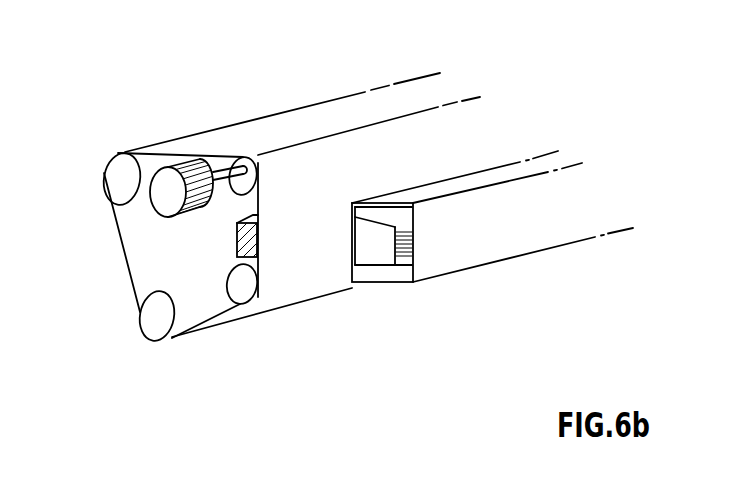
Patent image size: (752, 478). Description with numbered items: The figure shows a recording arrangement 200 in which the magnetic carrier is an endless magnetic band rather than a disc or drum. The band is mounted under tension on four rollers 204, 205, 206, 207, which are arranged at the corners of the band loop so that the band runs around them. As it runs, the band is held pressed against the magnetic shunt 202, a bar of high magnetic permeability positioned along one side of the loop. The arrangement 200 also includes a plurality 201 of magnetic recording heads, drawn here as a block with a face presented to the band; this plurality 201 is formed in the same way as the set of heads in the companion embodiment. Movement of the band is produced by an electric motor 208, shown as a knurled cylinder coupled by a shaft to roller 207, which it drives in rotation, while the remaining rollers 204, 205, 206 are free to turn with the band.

The recording arrangement 200 is at (442, 90).
The plurality of magnetic recording heads 201 is at (462, 273).
The magnetic shunt 202 is at (237, 240).
The roller 204 is at (107, 187).
The roller 205 is at (152, 322).
The roller 206 is at (257, 302).
The roller 207 is at (243, 160).
The electric motor 208 is at (153, 208).